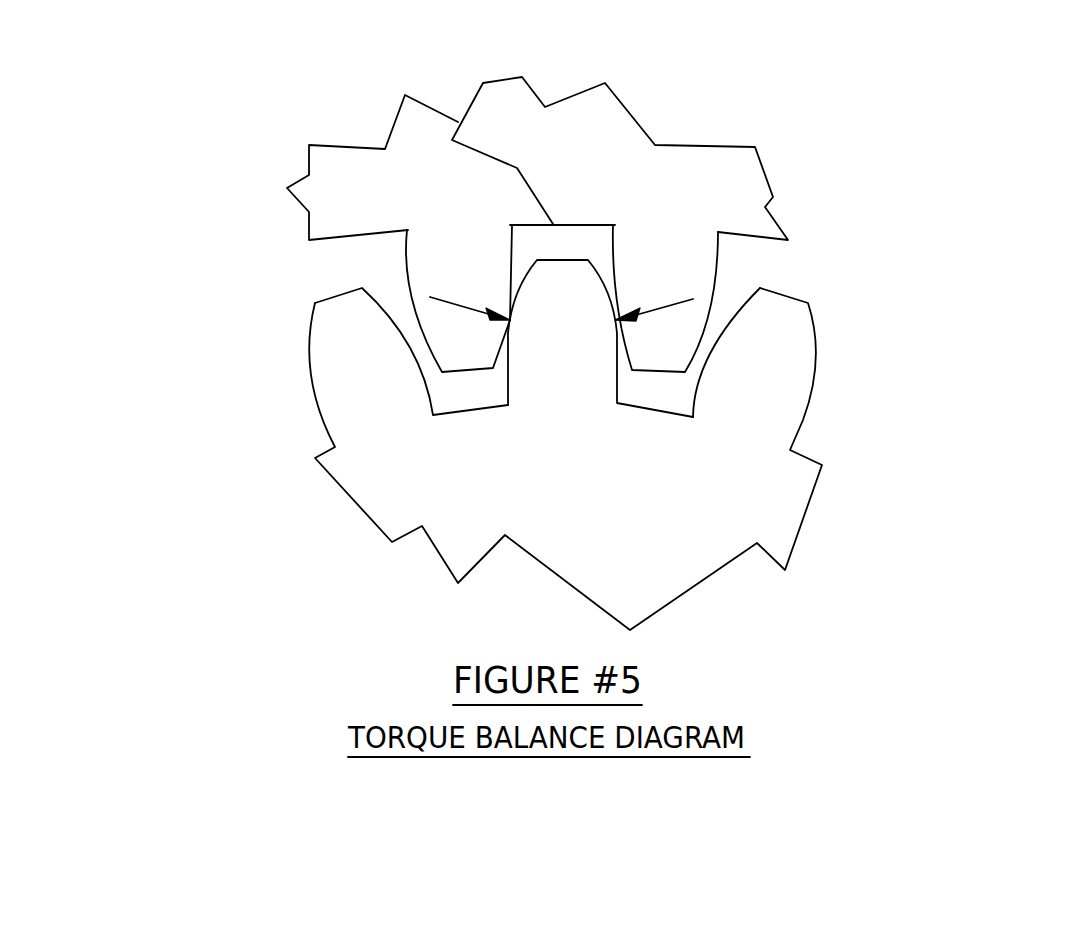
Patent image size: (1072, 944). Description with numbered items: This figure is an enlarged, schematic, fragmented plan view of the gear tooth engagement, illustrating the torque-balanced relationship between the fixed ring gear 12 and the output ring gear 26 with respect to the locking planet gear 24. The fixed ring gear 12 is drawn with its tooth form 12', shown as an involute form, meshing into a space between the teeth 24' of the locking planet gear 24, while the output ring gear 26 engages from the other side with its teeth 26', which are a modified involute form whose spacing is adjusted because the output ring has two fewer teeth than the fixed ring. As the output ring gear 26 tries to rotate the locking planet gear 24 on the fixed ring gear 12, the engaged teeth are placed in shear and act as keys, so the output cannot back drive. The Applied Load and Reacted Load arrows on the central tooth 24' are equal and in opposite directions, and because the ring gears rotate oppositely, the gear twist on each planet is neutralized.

The fixed ring gear 12 is at (334, 147).
The tooth form of the fixed ring gear 12' is at (321, 275).
The output ring gear 26 is at (683, 158).
The output ring gear teeth 26' is at (803, 284).
The locking planet gear 24 is at (635, 434).
The planet gear teeth 24' is at (569, 338).